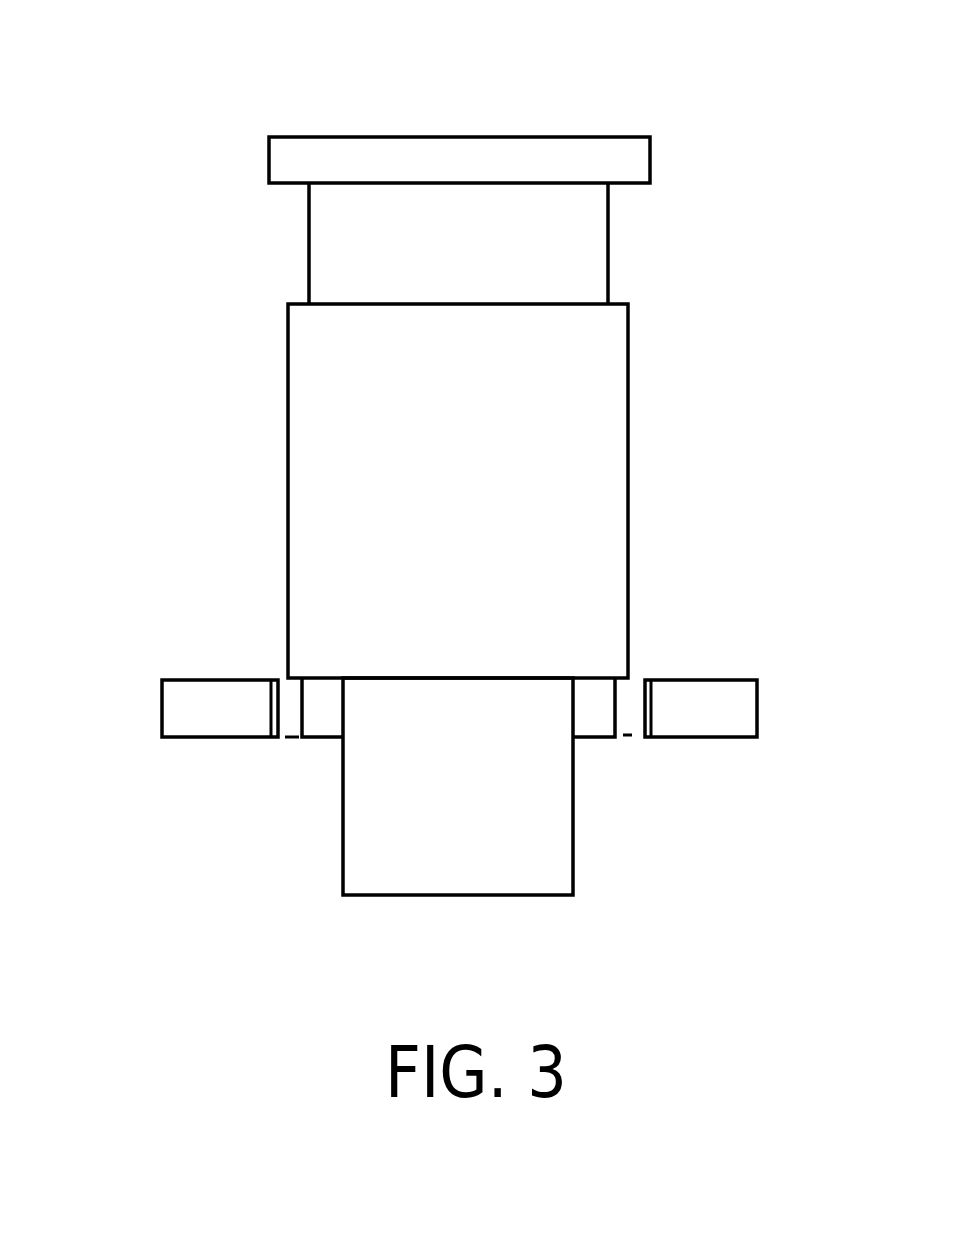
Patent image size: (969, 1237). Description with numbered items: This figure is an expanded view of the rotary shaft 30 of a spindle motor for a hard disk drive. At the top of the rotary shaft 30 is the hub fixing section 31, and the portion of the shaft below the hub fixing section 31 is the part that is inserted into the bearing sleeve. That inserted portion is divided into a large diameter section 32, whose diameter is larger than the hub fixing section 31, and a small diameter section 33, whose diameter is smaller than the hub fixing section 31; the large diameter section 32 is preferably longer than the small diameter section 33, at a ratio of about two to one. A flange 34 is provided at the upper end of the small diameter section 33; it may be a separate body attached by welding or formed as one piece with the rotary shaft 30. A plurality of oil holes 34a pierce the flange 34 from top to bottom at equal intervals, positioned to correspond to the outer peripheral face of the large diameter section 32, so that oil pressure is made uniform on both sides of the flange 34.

The rotary shaft 30 is at (703, 110).
The hub fixing section 31 is at (565, 252).
The large diameter section 32 is at (592, 482).
The small diameter section 33 is at (473, 863).
The flange 34 is at (187, 713).
The oil holes 34a is at (288, 712).